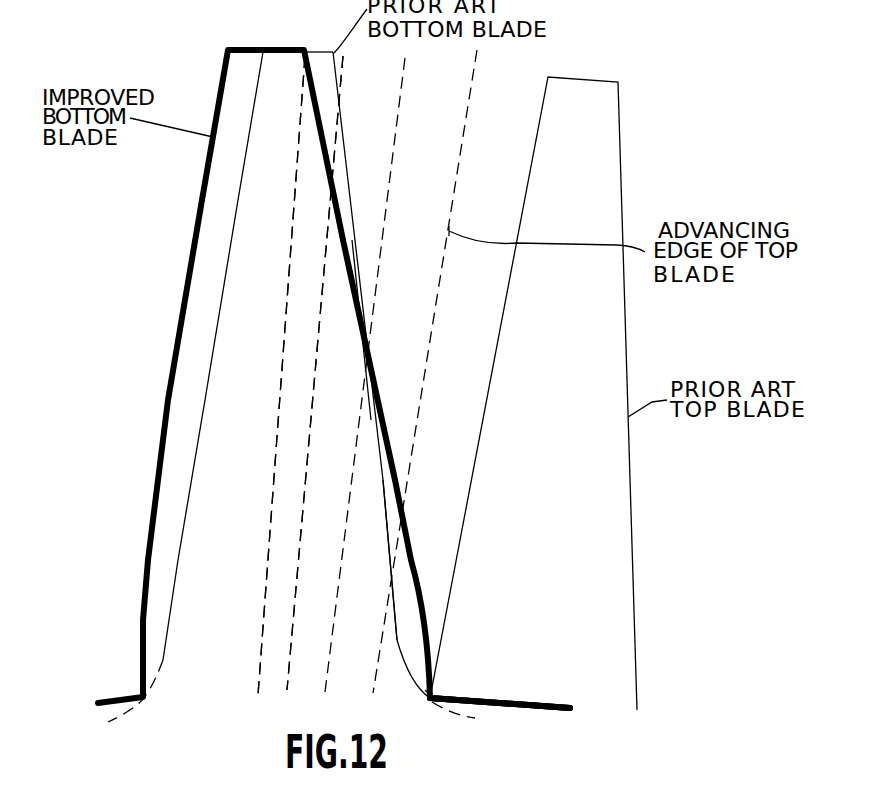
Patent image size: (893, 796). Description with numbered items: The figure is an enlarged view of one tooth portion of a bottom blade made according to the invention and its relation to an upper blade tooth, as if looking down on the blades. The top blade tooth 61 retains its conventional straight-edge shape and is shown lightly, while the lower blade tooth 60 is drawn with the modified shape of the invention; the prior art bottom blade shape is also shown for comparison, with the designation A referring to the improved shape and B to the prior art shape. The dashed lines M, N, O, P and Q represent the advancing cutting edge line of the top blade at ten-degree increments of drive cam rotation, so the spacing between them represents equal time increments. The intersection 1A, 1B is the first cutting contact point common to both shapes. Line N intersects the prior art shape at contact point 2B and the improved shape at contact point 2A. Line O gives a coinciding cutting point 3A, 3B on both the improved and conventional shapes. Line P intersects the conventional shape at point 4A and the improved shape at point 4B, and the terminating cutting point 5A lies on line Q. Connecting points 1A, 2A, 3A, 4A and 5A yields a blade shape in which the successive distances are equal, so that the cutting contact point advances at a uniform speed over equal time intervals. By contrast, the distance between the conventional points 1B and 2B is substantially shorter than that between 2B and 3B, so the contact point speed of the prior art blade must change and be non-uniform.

The lower blade tooth 60 is at (223, 75).
The top blade tooth 61 is at (592, 85).
The terminating cutting point 5A is at (321, 42).
The cutting contact point 4A is at (292, 375).
The cutting contact point 4B is at (328, 373).
The coinciding cutting point 3A is at (370, 330).
The coinciding cutting point 3B is at (379, 330).
The contact cutting point 2A is at (418, 520).
The contact cutting point 2B is at (378, 560).
The first cutting contact point 1A is at (500, 691).
The first cutting contact point 1B is at (500, 691).
The advancing cutting edge line M is at (421, 705).
The advancing cutting edge line N is at (423, 381).
The advancing cutting edge line O is at (361, 389).
The advancing cutting edge line P is at (312, 386).
The advancing cutting edge line Q is at (276, 391).